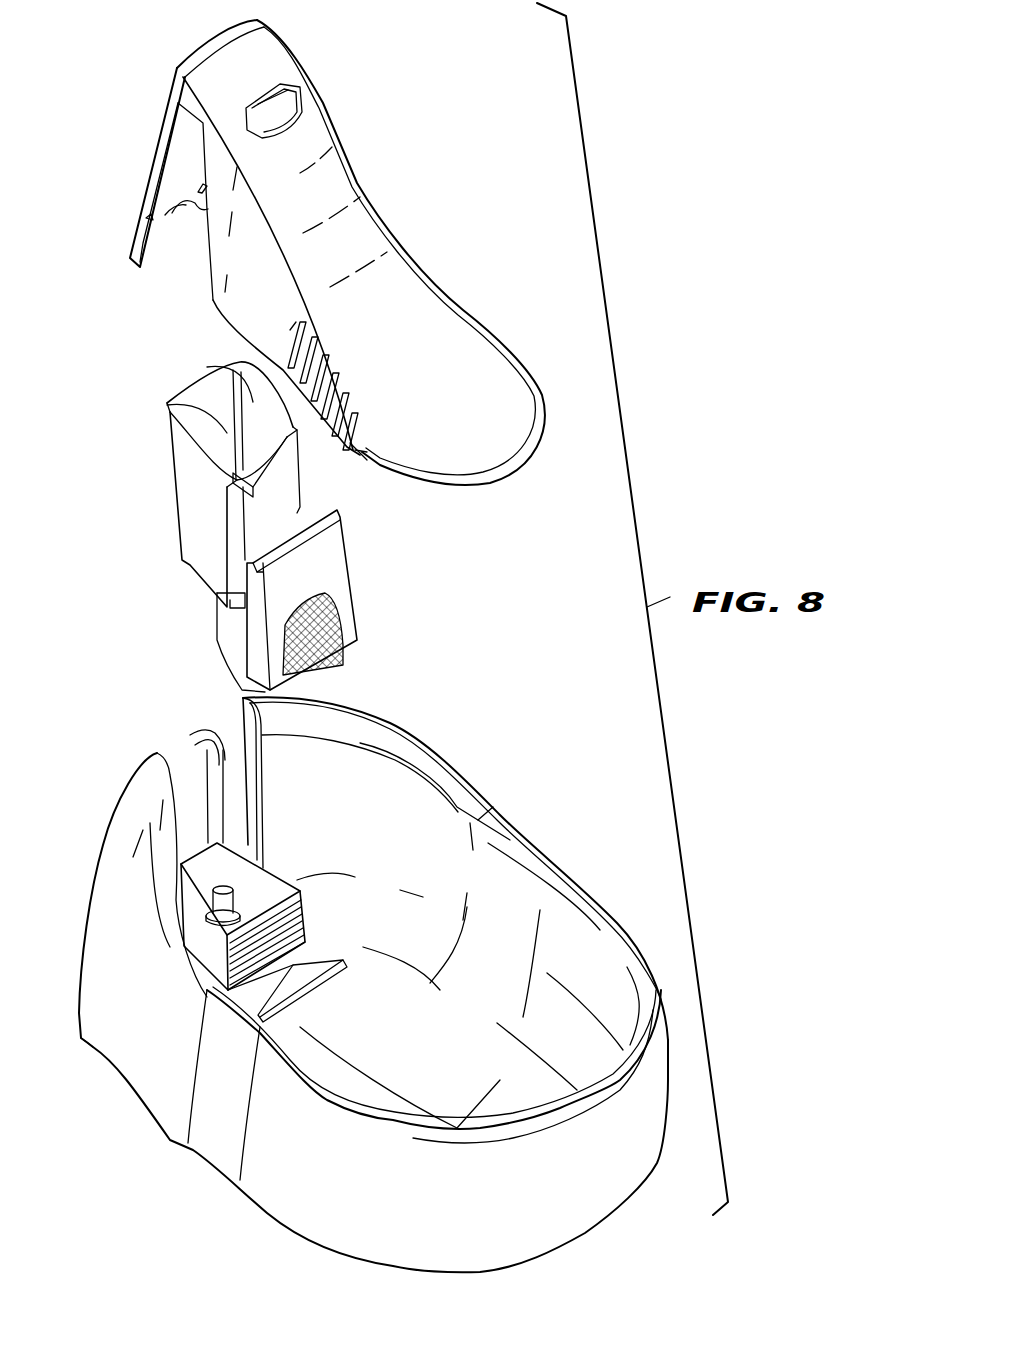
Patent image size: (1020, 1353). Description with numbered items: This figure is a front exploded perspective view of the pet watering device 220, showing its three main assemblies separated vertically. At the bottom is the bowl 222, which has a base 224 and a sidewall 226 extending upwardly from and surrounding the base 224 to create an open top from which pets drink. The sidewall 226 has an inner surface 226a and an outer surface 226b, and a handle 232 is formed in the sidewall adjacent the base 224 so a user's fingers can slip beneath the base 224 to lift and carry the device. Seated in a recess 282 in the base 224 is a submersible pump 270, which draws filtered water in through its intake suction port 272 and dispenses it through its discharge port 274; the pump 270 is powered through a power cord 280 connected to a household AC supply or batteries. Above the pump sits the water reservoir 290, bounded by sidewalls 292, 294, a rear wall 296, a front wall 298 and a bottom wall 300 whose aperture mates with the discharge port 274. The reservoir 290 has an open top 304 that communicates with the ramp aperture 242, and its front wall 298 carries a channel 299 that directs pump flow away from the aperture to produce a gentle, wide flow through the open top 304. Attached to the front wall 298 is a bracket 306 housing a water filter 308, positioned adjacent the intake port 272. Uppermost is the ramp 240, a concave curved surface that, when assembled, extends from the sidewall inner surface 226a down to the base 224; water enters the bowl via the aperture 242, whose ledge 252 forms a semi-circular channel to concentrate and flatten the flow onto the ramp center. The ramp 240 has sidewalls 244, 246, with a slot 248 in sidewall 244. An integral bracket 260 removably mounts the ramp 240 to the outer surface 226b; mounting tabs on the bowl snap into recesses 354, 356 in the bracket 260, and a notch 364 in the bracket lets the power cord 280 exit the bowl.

The pet watering device 220 is at (412, 146).
The bowl 222 is at (583, 900).
The base 224 is at (445, 1085).
The sidewall 226 is at (287, 1203).
The inner surface 226a is at (424, 824).
The outer surface 226b is at (388, 1161).
The handle 232 is at (130, 1088).
The ramp 240 is at (420, 340).
The aperture 242 is at (289, 96).
The ramp sidewall 244 is at (278, 285).
The ramp sidewall 246 is at (400, 240).
The slot 248 is at (308, 357).
The ledge 252 is at (294, 113).
The bracket 260 is at (160, 137).
The submersible pump 270 is at (257, 882).
The intake suction port 272 is at (300, 913).
The discharge port 274 is at (213, 908).
The power cord 280 is at (198, 749).
The recess 282 is at (317, 941).
The water reservoir 290 is at (150, 469).
The sidewall 292 is at (197, 507).
The sidewall 294 is at (253, 402).
The rear wall 296 is at (203, 407).
The front wall 298 is at (280, 473).
The channel 299 is at (245, 523).
The bottom wall 300 is at (217, 583).
The open top 304 is at (167, 405).
The bracket 306 is at (327, 566).
The water filter 308 is at (317, 627).
The recess 354 is at (203, 188).
The recess 356 is at (150, 222).
The notch 364 is at (170, 206).